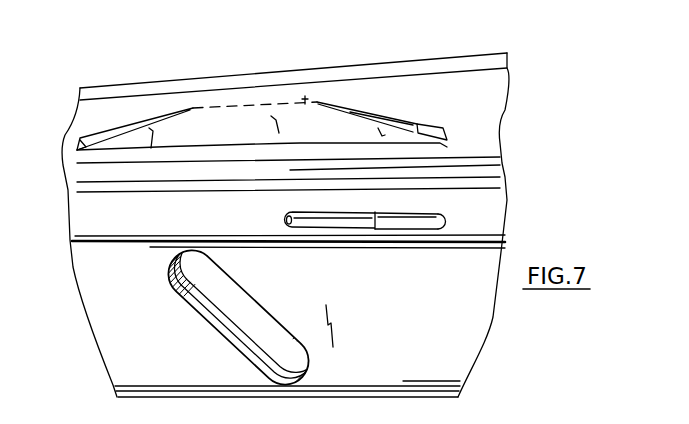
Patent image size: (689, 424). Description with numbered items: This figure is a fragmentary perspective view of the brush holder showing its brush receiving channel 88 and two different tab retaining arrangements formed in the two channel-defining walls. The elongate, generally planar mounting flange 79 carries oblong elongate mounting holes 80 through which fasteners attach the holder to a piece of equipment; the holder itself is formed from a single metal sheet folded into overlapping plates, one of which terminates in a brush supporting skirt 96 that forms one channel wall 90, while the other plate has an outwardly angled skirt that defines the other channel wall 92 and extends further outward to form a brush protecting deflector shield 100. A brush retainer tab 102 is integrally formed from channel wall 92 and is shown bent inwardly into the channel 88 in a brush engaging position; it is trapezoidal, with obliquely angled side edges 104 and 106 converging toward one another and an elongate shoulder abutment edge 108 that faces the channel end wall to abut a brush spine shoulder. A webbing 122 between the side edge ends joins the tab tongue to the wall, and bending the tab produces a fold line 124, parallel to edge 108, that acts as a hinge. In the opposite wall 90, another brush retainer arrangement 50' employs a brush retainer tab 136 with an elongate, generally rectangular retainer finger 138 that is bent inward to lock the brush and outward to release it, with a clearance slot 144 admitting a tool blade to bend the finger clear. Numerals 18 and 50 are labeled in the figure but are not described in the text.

The panel side edge 18 is at (97, 357).
The fabric panel 50 is at (268, 87).
The brush retainer arrangement 50' is at (355, 301).
The mounting flange 79 is at (503, 343).
The mounting holes 80 is at (210, 343).
The brush receiving channel 88 is at (97, 116).
The channel wall 90 is at (491, 174).
The channel wall 92 is at (144, 104).
The brush supporting skirt 96 is at (499, 182).
The brush protecting deflector shield 100 is at (115, 90).
The brush retainer tab 102 is at (393, 99).
The side edge 104 is at (82, 148).
The side edge 106 is at (417, 130).
The shoulder abutment edge 108 is at (445, 147).
The webbing 122 is at (223, 100).
The fold line 124 is at (305, 99).
The brush retainer tab 136 is at (427, 221).
The retainer finger 138 is at (410, 218).
The clearance slot 144 is at (322, 232).